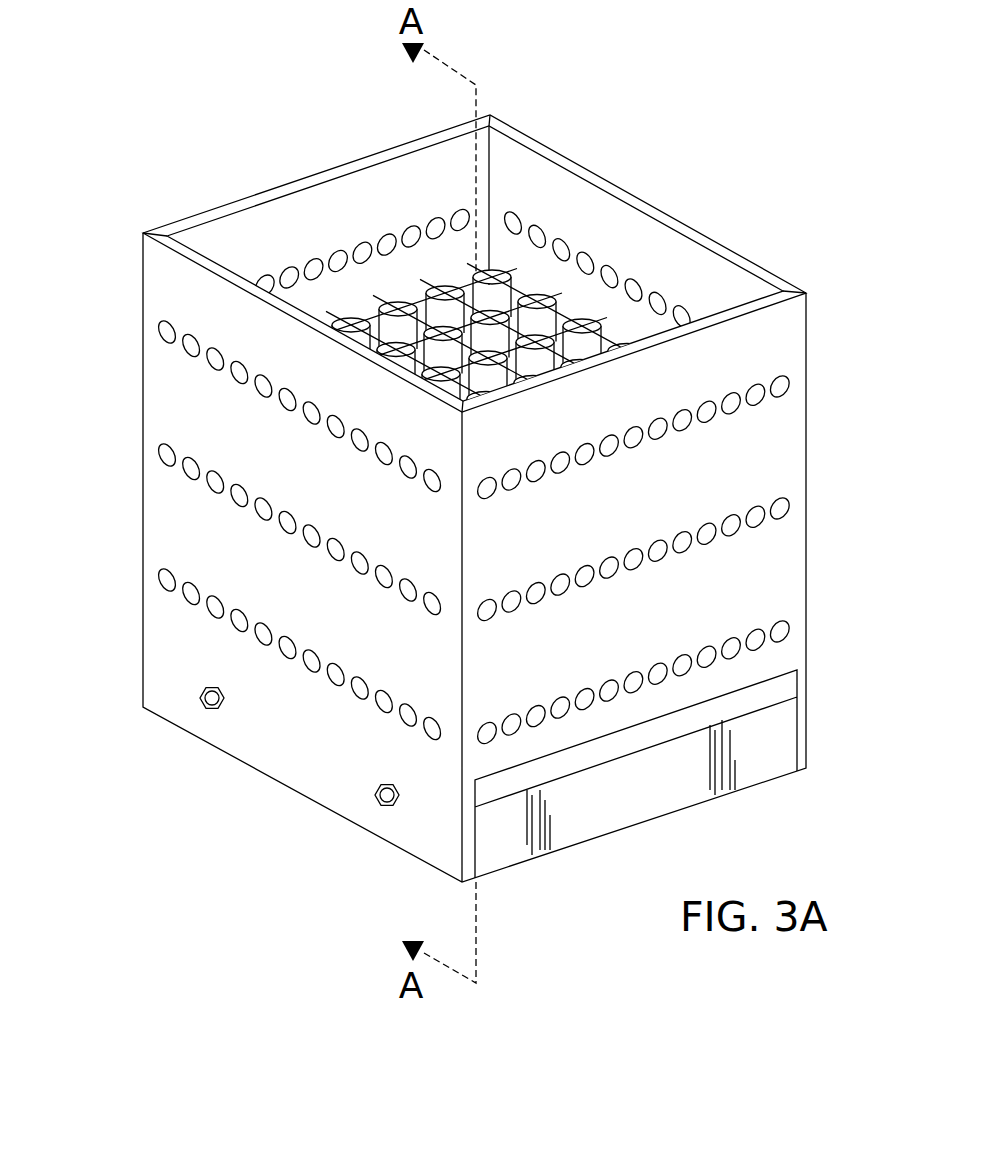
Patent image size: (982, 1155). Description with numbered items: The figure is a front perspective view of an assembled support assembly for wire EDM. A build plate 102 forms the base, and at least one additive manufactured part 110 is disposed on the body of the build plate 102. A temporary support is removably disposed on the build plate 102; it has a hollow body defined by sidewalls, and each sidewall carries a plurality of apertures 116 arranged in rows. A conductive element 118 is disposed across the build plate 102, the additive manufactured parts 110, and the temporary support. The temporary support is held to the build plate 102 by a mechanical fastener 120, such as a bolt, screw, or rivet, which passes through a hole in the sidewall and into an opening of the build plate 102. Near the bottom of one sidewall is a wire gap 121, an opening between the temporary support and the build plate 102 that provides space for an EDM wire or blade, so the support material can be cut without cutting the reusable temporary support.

The build plate 102 is at (770, 780).
The additive manufactured part 110 is at (606, 327).
The apertures 116 is at (159, 332).
The conductive element 118 is at (473, 261).
The mechanical fastener 120 is at (373, 803).
The wire gap 121 is at (776, 688).